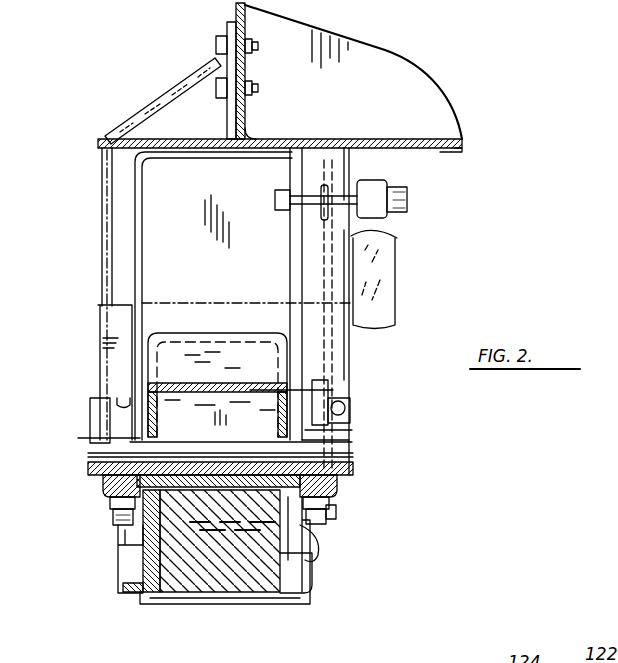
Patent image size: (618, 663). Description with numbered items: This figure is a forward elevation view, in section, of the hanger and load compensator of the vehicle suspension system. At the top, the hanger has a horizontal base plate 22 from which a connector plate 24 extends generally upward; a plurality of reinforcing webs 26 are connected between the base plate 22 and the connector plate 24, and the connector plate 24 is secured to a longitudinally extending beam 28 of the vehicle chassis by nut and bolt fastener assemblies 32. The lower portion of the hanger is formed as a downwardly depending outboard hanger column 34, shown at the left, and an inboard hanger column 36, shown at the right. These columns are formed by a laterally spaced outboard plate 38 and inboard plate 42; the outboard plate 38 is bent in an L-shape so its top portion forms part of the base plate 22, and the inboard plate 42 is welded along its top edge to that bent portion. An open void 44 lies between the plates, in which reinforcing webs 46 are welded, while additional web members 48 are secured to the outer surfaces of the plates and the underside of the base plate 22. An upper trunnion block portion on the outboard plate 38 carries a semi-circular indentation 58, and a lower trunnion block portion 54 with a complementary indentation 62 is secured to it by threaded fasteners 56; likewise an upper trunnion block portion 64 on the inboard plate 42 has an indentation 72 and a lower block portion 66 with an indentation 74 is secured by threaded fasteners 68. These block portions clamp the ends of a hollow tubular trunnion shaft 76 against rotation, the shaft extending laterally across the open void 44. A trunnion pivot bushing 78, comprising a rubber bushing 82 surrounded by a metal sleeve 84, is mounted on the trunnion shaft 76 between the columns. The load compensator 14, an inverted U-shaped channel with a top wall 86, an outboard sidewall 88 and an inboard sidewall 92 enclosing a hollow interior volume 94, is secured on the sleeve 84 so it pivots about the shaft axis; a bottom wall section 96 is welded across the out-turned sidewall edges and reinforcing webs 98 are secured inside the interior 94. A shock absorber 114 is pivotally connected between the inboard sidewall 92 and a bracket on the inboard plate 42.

The load compensator 14 is at (333, 390).
The base plate 22 is at (105, 138).
The connector plate 24 is at (224, 70).
The reinforcing webs 26 is at (135, 118).
The longitudinally extending beam 28 is at (234, 16).
The nut and bolt fastener assemblies 32 is at (259, 90).
The outboard hanger column 34 is at (99, 278).
The inboard hanger column 36 is at (356, 360).
The outboard plate 38 is at (143, 232).
The inboard plate 42 is at (290, 258).
The open void 44 is at (256, 170).
The reinforcing webs 46 is at (200, 198).
The web members 48 is at (110, 212).
The lower portion of trunnion block 54 is at (104, 480).
The threaded fasteners 56 is at (115, 507).
The semi-circular indentation 58 is at (120, 400).
The semi-circular indentation 62 is at (105, 458).
The upper portion of trunnion block 64 is at (352, 428).
The lower portion of trunnion block 66 is at (335, 490).
The threaded fasteners 68 is at (336, 510).
The semi-circular indentation 72 is at (358, 412).
The semi-circular indentation 74 is at (346, 471).
The trunnion shaft 76 is at (90, 402).
The trunnion pivot bushing 78 is at (318, 540).
The rubber bushing 82 is at (120, 530).
The metal sleeve 84 is at (143, 540).
The top wall 86 is at (185, 352).
The outboard sidewall 88 is at (134, 592).
The inboard sidewall 92 is at (310, 575).
The hollow interior volume 94 is at (247, 572).
The bottom wall section 96 is at (170, 605).
The reinforcing webs 98 is at (218, 605).
The shock absorber 114 is at (394, 270).